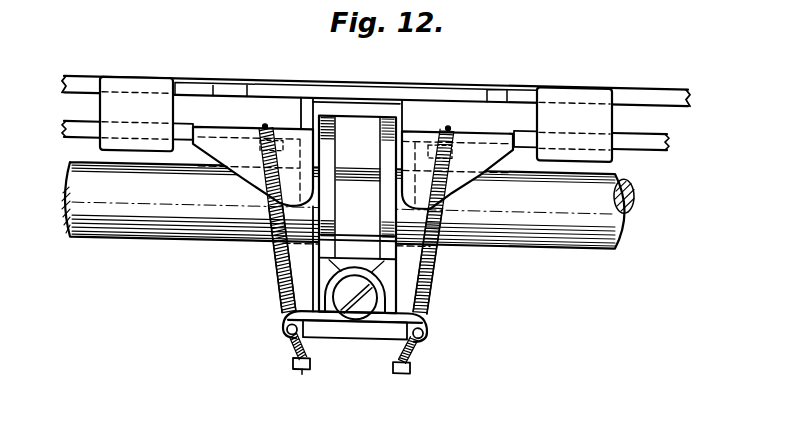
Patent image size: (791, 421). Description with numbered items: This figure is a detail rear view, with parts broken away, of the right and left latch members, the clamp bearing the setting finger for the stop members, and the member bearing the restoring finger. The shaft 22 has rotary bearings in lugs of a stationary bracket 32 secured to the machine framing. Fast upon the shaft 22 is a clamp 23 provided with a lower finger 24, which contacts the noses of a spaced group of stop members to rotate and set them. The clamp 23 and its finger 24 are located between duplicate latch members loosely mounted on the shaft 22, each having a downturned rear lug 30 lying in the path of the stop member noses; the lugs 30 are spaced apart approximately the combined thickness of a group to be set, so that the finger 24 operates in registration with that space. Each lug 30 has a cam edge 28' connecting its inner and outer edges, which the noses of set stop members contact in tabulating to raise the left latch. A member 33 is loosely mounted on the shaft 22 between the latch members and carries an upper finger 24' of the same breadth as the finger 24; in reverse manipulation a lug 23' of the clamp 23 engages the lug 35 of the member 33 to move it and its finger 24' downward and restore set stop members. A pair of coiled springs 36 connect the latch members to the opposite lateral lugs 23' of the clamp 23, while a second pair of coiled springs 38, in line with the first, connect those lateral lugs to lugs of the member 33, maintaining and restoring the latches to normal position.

The shaft 22 is at (162, 222).
The clamp 23 is at (355, 228).
The lateral lugs 23' is at (360, 336).
The finger 24 is at (356, 235).
The upper finger 24' is at (369, 84).
The cam edge 28' is at (349, 205).
The downturned rear lug 30 is at (463, 150).
The stationary bracket 32 is at (342, 89).
The member 33 is at (403, 284).
The lug 35 is at (405, 376).
The coiled springs 36 is at (437, 266).
The second pair of coiled springs 38 is at (416, 356).